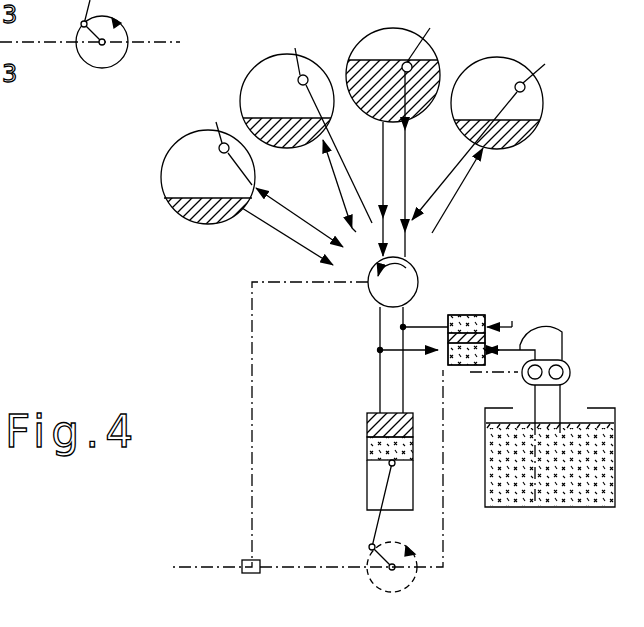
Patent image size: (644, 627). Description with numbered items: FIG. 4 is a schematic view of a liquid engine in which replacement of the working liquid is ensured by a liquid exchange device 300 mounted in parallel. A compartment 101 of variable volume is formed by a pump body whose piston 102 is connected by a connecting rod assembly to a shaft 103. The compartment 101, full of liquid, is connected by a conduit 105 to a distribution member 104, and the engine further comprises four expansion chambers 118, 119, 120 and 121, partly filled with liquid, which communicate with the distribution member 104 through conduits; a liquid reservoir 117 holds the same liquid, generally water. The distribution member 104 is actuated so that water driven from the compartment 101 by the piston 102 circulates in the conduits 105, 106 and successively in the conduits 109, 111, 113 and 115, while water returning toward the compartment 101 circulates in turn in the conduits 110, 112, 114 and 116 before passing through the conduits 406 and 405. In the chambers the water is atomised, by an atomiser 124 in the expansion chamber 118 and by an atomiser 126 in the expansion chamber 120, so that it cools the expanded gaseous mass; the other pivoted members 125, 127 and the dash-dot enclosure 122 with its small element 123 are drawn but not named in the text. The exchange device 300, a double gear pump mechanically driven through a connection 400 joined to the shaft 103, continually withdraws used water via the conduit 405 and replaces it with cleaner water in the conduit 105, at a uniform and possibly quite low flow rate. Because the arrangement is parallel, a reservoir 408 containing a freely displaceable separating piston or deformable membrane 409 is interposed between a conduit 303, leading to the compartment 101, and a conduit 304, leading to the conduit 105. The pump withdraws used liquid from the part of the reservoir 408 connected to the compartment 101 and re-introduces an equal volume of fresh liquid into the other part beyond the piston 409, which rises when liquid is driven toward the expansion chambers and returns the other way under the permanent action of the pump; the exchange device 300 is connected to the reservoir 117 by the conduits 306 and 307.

The compartment of variable volume 101 is at (370, 425).
The piston 102 is at (372, 450).
The shaft 103 is at (298, 566).
The distribution member 104 is at (418, 284).
The conduit 105 is at (405, 312).
The conduit 106 is at (407, 250).
The conduit 109 is at (453, 200).
The conduit 110 is at (455, 170).
The conduit 111 is at (407, 188).
The conduit 112 is at (385, 137).
The conduit 113 is at (364, 204).
The conduit 114 is at (332, 170).
The conduit 115 is at (292, 206).
The conduit 116 is at (278, 236).
The liquid reservoir 117 is at (490, 410).
The expansion chamber 118 is at (543, 92).
The expansion chamber 119 is at (437, 52).
The expansion chamber 120 is at (248, 74).
The expansion chamber 121 is at (168, 152).
The control unit boundary 122 is at (252, 350).
The control element 123 is at (255, 560).
The atomiser 124 is at (543, 66).
The accumulator piston pivot 125 is at (428, 36).
The atomiser 126 is at (303, 53).
The accumulator piston pivot 127 is at (215, 124).
The liquid exchange device 300 is at (572, 365).
The conduit 303 is at (560, 326).
The conduit 304 is at (512, 321).
The conduit 306 is at (533, 393).
The conduit 307 is at (572, 380).
The connection 400 is at (492, 333).
The conduit 405 is at (378, 323).
The conduit 406 is at (384, 246).
The reservoir 408 is at (478, 314).
The separating piston 409 is at (470, 316).